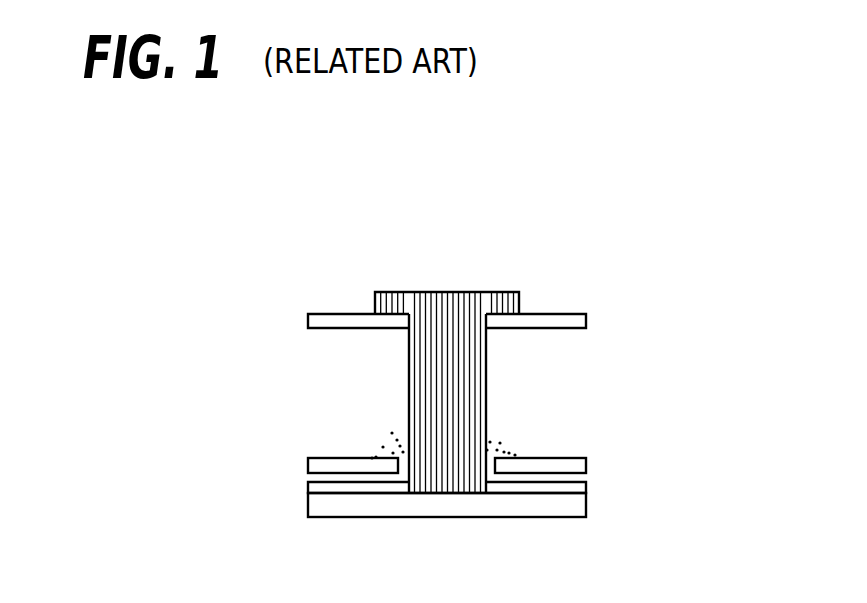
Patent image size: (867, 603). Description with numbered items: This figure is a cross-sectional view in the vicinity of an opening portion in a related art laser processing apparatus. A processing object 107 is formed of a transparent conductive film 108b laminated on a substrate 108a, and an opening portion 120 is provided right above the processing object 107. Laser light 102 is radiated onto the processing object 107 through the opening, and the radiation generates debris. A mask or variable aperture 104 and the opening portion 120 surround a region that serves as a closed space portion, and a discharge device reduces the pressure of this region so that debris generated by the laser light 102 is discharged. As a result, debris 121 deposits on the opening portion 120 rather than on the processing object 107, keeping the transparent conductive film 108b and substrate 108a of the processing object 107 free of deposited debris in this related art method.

The laser light 102 is at (447, 311).
The mask or variable aperture 104 is at (557, 314).
The processing object 107 is at (532, 497).
The substrate 108a is at (572, 505).
The transparent conductive film 108b is at (572, 487).
The opening portion 120 is at (403, 460).
The debris 121 is at (500, 440).